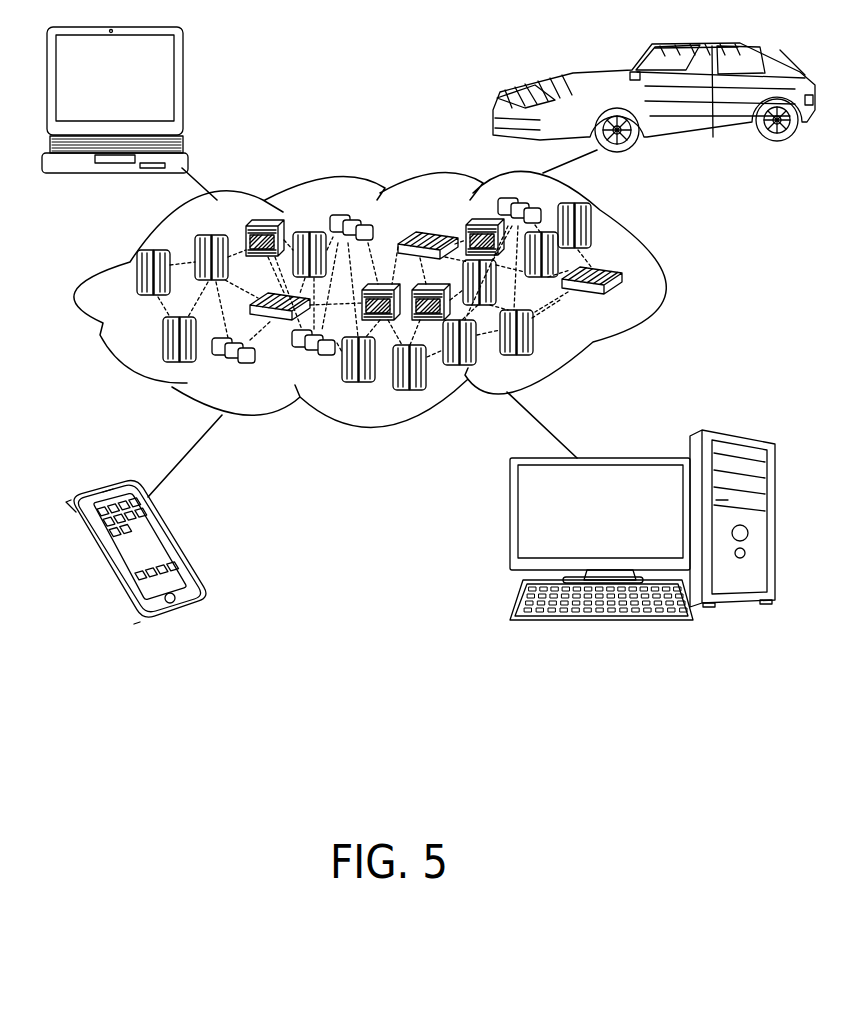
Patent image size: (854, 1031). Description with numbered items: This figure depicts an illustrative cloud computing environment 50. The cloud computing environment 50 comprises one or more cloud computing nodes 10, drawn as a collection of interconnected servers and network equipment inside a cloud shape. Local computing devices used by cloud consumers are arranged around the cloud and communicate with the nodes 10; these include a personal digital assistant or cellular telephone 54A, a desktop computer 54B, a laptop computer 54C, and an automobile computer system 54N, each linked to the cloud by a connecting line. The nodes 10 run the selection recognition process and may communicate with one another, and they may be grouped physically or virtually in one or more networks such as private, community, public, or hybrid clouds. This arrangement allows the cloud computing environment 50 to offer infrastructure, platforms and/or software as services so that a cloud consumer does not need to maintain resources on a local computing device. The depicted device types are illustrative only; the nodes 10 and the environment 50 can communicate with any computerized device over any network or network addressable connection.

The cloud computing node 10 is at (624, 292).
The cloud computing environment 50 is at (663, 281).
The personal digital assistant or cellular telephone 54A is at (163, 540).
The desktop computer 54B is at (653, 457).
The laptop computer 54C is at (170, 96).
The automobile computer system 54N is at (510, 97).